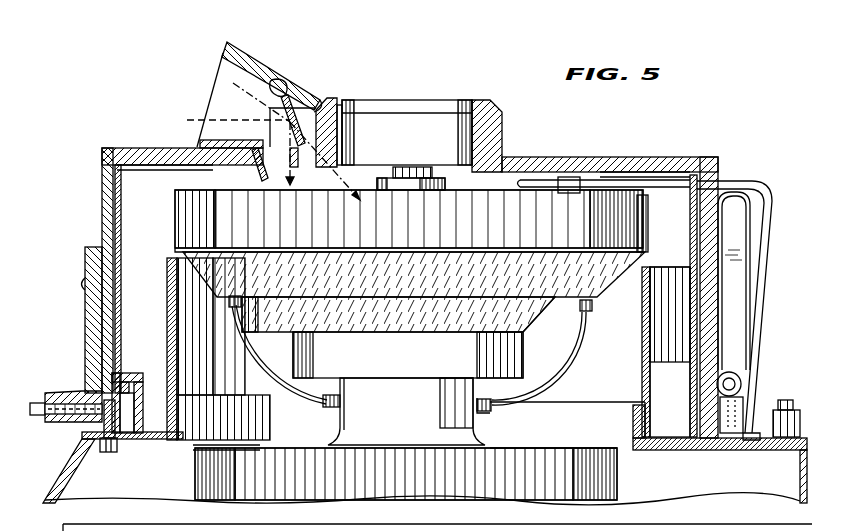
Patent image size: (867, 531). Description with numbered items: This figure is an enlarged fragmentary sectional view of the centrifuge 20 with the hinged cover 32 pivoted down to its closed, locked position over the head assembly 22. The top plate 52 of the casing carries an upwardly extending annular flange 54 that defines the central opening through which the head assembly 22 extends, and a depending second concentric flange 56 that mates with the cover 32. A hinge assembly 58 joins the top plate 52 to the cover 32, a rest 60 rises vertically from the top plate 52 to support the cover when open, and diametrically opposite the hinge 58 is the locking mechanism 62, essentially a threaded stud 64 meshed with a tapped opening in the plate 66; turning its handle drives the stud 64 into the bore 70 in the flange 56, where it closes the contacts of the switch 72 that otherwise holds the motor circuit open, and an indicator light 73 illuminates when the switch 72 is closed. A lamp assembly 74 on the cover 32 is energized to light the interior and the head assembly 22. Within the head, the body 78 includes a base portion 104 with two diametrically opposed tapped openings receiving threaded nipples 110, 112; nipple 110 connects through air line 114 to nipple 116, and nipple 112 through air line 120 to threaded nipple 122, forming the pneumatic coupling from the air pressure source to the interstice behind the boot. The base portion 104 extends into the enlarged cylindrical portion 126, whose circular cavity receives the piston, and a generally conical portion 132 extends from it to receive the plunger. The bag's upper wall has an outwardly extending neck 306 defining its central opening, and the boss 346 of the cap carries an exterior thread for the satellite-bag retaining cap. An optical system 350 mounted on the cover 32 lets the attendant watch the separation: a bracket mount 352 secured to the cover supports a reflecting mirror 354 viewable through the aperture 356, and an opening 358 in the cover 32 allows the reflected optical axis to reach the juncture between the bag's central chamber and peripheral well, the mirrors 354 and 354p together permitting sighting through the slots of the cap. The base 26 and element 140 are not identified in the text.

The centrifuge 20 is at (112, 86).
The head assembly 22 is at (164, 201).
The base 26 is at (492, 434).
The hinged cover 32 is at (779, 268).
The top plate 52 is at (772, 430).
The annular flange 54 is at (636, 443).
The second concentric flange 56 is at (116, 438).
The hinge assembly 58 is at (742, 381).
The rest 60 is at (795, 400).
The locking mechanism 62 is at (51, 383).
The threaded stud 64 is at (42, 415).
The plate 66 is at (93, 382).
The bore 70 is at (122, 408).
The switch 72 is at (117, 448).
The indicator light 73 is at (80, 284).
The lamp assembly 74 is at (571, 166).
The body 78 is at (182, 256).
The base portion 104 is at (481, 420).
The nipple 110 is at (333, 404).
The nipple 112 is at (496, 386).
The air line 114 is at (238, 338).
The nipple 116 is at (229, 303).
The air line 120 is at (571, 357).
The threaded nipple 122 is at (590, 311).
The cylindrical portion 126 is at (548, 373).
The conical portion 132 is at (530, 322).
The rotor rim 140 is at (640, 218).
The neck 306 is at (452, 156).
The boss 346 is at (446, 184).
The optical system 350 is at (203, 58).
The bracket mount 352 is at (205, 143).
The reflecting mirror 354 is at (283, 96).
The mirror 354p is at (266, 182).
The aperture 356 is at (220, 107).
The opening 358 is at (303, 165).